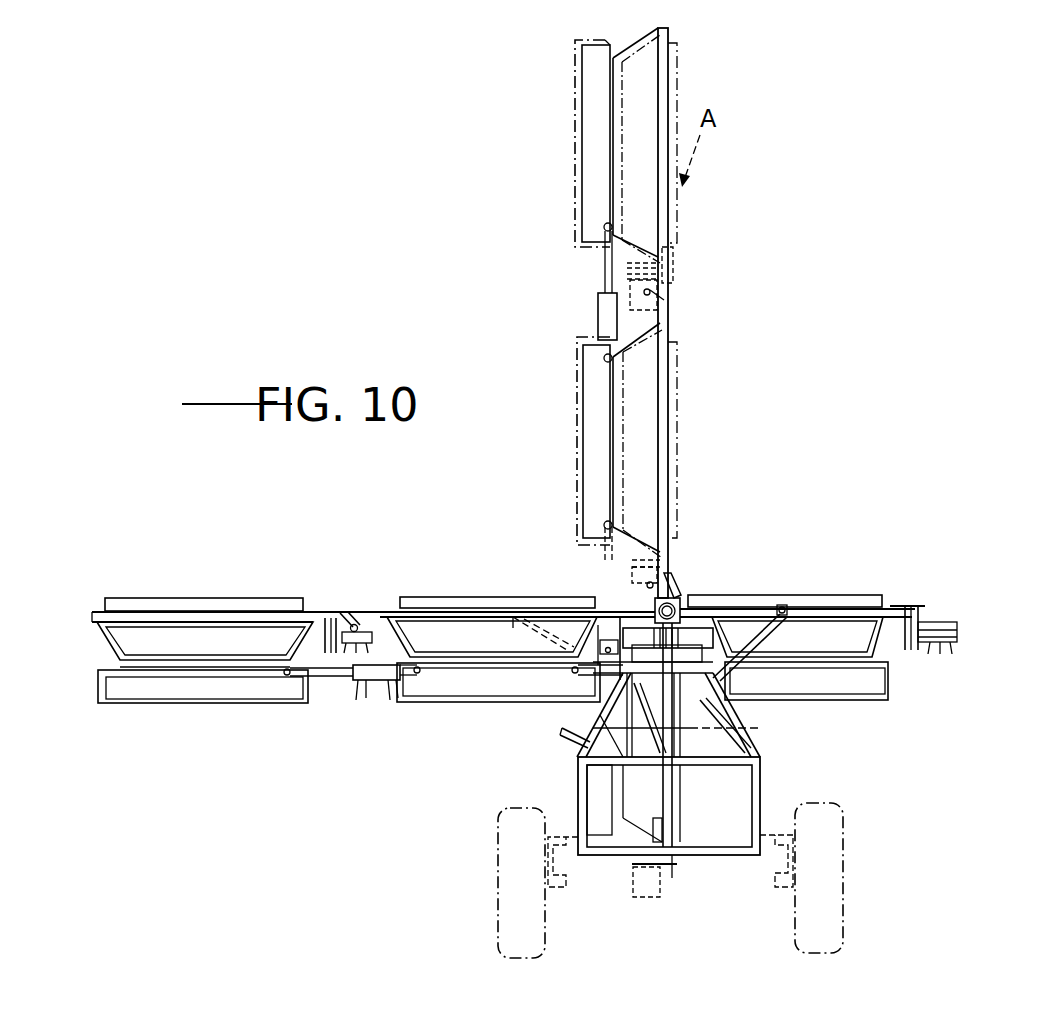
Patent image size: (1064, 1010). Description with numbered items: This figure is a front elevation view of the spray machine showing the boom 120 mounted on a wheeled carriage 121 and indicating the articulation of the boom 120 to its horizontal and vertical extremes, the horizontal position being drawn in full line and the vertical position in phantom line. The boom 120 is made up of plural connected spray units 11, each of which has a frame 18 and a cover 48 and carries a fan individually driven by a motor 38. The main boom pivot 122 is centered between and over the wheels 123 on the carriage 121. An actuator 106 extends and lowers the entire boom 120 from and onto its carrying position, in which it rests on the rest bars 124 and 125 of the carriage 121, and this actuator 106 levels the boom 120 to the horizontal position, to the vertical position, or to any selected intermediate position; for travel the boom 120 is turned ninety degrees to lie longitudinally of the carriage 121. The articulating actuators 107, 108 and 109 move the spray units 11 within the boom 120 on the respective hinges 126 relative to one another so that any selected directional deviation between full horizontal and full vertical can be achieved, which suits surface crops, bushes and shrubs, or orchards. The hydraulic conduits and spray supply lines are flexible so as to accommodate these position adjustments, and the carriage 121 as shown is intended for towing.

The spray unit 11 is at (268, 584).
The frame 18 is at (192, 704).
The motor 38 is at (372, 613).
The cover strip 48 is at (188, 617).
The actuator 106 is at (673, 793).
The articulating actuator 107 is at (598, 722).
The articulating actuator 108 is at (600, 638).
The articulating actuator 109 is at (600, 320).
The boom 120 is at (684, 92).
The wheeled carriage 121 is at (796, 771).
The main boom pivot 122 is at (698, 583).
The wheel 123 is at (500, 880).
The rest bar 124 is at (718, 603).
The rest bar 125 is at (715, 648).
The hinge 126 is at (357, 600).